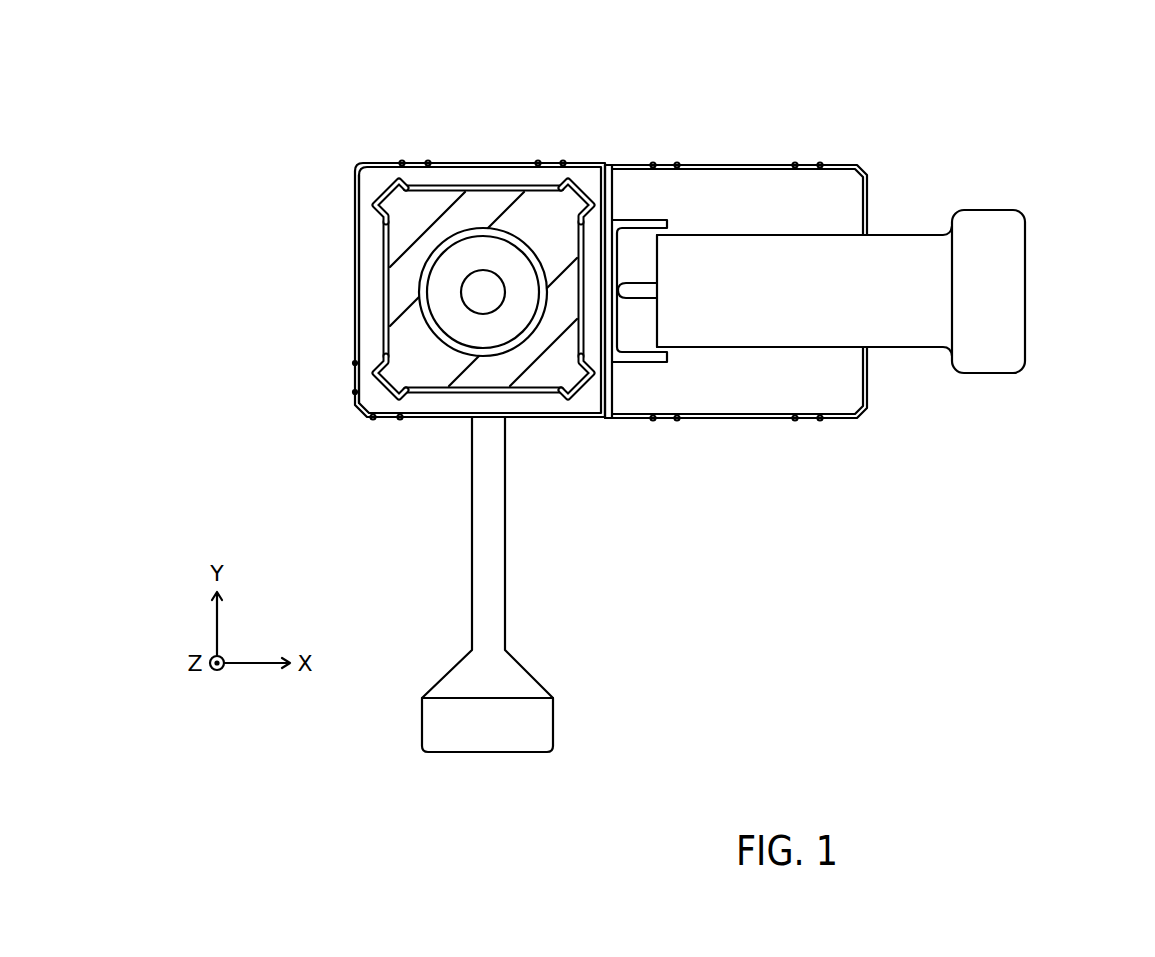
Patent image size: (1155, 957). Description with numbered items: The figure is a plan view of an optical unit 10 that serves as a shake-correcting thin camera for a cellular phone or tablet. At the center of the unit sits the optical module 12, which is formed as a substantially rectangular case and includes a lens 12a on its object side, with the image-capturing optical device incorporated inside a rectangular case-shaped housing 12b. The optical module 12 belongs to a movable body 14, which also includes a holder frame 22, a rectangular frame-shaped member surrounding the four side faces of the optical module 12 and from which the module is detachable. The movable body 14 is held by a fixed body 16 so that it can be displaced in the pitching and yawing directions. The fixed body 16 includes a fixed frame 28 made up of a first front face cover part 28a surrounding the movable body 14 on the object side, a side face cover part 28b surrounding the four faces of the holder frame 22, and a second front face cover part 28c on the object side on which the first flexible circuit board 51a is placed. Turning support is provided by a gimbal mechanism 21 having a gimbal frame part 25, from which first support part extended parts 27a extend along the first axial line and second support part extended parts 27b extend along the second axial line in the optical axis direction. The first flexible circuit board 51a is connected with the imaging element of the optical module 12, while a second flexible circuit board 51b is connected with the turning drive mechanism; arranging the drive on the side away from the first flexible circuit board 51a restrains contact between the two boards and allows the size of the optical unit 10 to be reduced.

The optical unit 10 is at (1062, 130).
The optical module 12 is at (565, 125).
The lens 12a is at (483, 291).
The housing 12b is at (542, 292).
The movable body 14 is at (586, 337).
The fixed body 16 is at (360, 163).
The gimbal mechanism 21 is at (413, 258).
The holder frame 22 is at (610, 362).
The gimbal frame part 25 is at (455, 222).
The first support part extended parts 27a is at (383, 190).
The second support part extended parts 27b is at (586, 183).
The fixed frame 28 is at (568, 292).
The first front face cover part 28a is at (373, 300).
The side face cover part 28b is at (737, 424).
The second front face cover part 28c is at (764, 204).
The first flexible circuit board 51a is at (877, 258).
The second flexible circuit board 51b is at (485, 507).